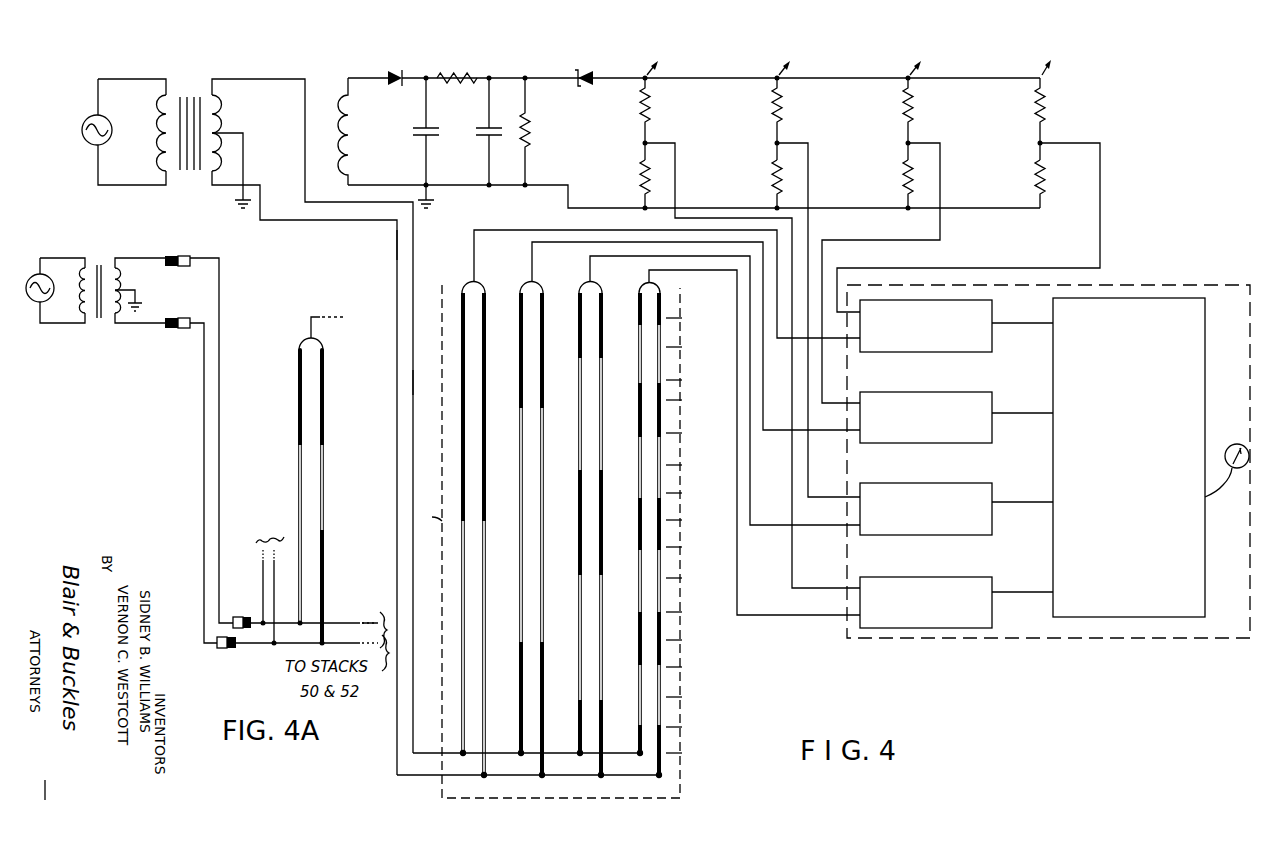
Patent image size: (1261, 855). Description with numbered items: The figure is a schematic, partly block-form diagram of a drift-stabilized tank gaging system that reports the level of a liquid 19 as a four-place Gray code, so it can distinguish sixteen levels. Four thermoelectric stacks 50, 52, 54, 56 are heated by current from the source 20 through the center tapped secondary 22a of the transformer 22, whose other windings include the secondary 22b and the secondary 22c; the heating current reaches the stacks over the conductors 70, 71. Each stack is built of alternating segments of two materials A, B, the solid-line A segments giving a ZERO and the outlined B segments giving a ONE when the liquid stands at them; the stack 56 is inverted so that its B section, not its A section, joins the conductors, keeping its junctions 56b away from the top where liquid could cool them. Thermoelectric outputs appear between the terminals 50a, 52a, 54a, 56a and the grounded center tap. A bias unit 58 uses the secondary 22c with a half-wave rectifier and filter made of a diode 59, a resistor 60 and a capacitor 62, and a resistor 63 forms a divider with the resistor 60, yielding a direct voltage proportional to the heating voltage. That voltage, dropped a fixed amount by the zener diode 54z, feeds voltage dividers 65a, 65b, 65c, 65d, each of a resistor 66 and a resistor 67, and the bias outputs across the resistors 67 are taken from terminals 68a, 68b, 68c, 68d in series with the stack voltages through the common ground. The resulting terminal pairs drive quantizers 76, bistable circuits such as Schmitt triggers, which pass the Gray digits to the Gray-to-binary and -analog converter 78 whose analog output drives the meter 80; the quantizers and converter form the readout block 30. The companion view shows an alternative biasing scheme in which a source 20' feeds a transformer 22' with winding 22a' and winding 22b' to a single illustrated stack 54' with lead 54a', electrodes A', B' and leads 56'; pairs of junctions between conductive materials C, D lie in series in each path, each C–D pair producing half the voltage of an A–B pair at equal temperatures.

In FIG. 4, the source 20 is at (80, 152).
In FIG. 4, the transformer 22 is at (255, 398).
In FIG. 4, the center tapped secondary 22a is at (209, 96).
In FIG. 4, the secondary winding 22b is at (250, 151).
In FIG. 4, the secondary 22c is at (358, 150).
In FIG. 4, the bias unit 58 is at (689, 136).
In FIG. 4, the diode 59 is at (400, 70).
In FIG. 4, the resistor 60 is at (472, 70).
In FIG. 4, the capacitor 62 is at (432, 127).
In FIG. 4, the resistor 63 is at (531, 142).
In FIG. 4, the zener diode 54z is at (586, 70).
In FIG. 4, the voltage divider 65a is at (681, 57).
In FIG. 4, the voltage divider 65b is at (807, 56).
In FIG. 4, the voltage divider 65c is at (940, 54).
In FIG. 4, the voltage divider 65d is at (1064, 49).
In FIG. 4, the resistor 66 is at (655, 108).
In FIG. 4, the resistor 67 is at (652, 190).
In FIG. 4, the terminal 68a is at (650, 142).
In FIG. 4, the terminal 68b is at (782, 142).
In FIG. 4, the terminal 68c is at (913, 142).
In FIG. 4, the terminal 68d is at (1045, 140).
In FIG. 4, the conductor 70 is at (395, 245).
In FIG. 4, the conductor 71 is at (412, 382).
In FIG. 4, the liquid 19 is at (453, 567).
In FIG. 4, the thermoelectric stack 50 is at (630, 308).
In FIG. 4, the thermoelectric stack 52 is at (575, 322).
In FIG. 4, the thermoelectric stack 54 is at (517, 526).
In FIG. 4, the thermoelectric stack 56 is at (452, 530).
In FIG. 4, the terminal 50a is at (660, 285).
In FIG. 4, the terminal 52a is at (594, 282).
In FIG. 4, the terminal 54a is at (696, 336).
In FIG. 4, the terminal 56a is at (478, 283).
In FIG. 4, the junctions 56b is at (460, 755).
In FIG. 4, the segment A is at (565, 538).
In FIG. 4, the segment B is at (570, 551).
In FIG. 4, the quantizer 76 is at (982, 310).
In FIG. 4, the Gray-to-binary and -analog converter 78 is at (1188, 394).
In FIG. 4, the meter 80 is at (1227, 474).
In FIG. 4, the readout circuit 30 is at (1115, 640).
In FIG. 4A, the source 20' is at (40, 269).
In FIG. 4A, the transformer 22' is at (116, 297).
In FIG. 4A, the transformer winding 22a' is at (95, 274).
In FIG. 4A, the secondary winding 22b' is at (154, 290).
In FIG. 4A, the electrode stack 54' is at (293, 492).
In FIG. 4A, the stack lead 54a' is at (305, 321).
In FIG. 4A, the electrode leads 56' is at (270, 582).
In FIG. 4A, the electrode A' is at (315, 496).
In FIG. 4A, the electrode B' is at (336, 477).
In FIG. 4A, the conductive material C is at (165, 262).
In FIG. 4A, the conductive material D is at (186, 264).